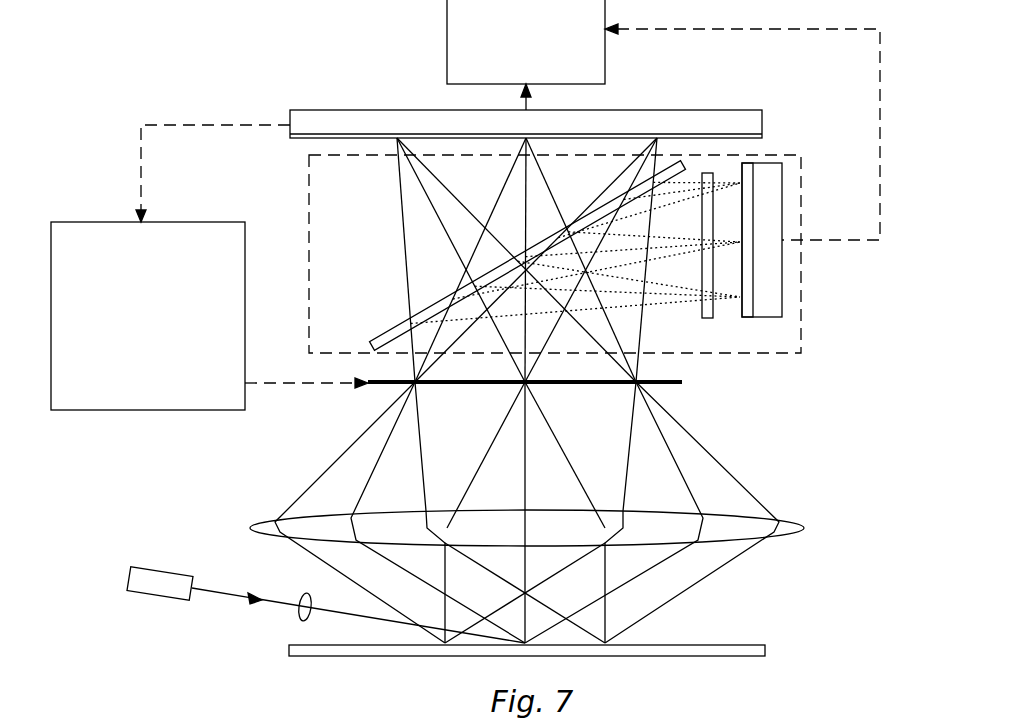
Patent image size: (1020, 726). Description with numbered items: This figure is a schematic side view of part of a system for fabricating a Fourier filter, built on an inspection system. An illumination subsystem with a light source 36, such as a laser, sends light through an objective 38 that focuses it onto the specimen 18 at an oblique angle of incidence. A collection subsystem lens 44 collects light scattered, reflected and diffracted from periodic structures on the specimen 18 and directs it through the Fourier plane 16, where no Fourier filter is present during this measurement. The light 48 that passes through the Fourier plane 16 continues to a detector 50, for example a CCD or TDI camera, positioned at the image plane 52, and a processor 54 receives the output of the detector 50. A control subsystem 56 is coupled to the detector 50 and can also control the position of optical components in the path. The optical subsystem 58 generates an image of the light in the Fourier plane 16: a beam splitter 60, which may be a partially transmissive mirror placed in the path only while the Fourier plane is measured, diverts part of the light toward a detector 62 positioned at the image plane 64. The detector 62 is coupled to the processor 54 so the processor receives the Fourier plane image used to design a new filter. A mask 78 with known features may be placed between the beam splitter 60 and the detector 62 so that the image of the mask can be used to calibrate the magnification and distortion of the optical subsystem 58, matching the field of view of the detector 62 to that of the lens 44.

The Fourier plane 16 is at (374, 385).
The specimen 18 is at (554, 633).
The light source 36 is at (129, 577).
The objective 38 is at (297, 617).
The lens 44 is at (561, 520).
The light 48 is at (405, 270).
The detector 50 is at (764, 118).
The image plane 52 is at (290, 142).
The processor 54 is at (512, 63).
The control subsystem 56 is at (134, 360).
The optical subsystem 58 is at (308, 222).
The beam splitter 60 is at (383, 336).
The detector 62 is at (797, 240).
The image plane 64 is at (800, 256).
The mask 78 is at (735, 261).